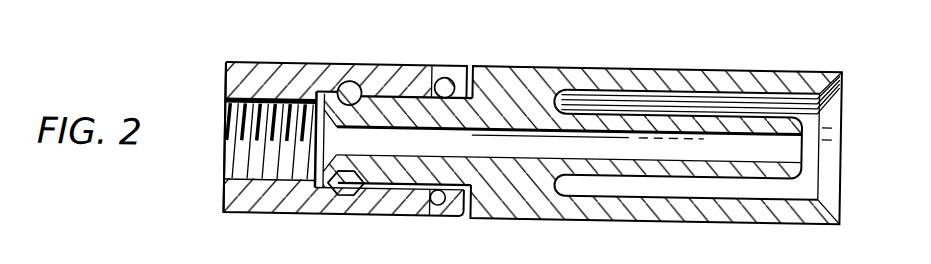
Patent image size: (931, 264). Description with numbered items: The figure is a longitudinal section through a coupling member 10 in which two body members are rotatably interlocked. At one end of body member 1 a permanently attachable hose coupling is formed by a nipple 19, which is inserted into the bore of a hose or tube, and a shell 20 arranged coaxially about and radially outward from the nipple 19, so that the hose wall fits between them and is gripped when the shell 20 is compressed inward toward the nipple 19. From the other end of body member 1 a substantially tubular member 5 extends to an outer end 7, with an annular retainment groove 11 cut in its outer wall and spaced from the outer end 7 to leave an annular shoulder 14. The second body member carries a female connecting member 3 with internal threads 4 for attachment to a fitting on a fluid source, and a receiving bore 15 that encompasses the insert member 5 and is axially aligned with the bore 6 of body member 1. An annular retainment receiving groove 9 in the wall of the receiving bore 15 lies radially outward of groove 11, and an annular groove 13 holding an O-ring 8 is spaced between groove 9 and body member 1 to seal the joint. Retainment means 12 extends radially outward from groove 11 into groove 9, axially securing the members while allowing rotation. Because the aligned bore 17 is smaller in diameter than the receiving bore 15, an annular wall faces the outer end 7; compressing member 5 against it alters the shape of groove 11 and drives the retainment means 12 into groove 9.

The body member 1 is at (396, 57).
The female connecting member 3 is at (227, 72).
The internal threads 4 is at (233, 113).
The tubular member 5 is at (397, 168).
The bore 6 is at (727, 148).
The outer end 7 is at (303, 197).
The O-ring 8 is at (447, 60).
The annular retainment receiving groove 9 is at (354, 79).
The coupling member 10 is at (537, 56).
The annular retainment groove 11 is at (338, 128).
The retainment means 12 is at (347, 78).
The annular groove 13 is at (450, 60).
The annular shoulder 14 is at (328, 198).
The receiving bore 15 is at (368, 186).
The bore 17 is at (239, 153).
The nipple 19 is at (673, 109).
The shell 20 is at (749, 63).